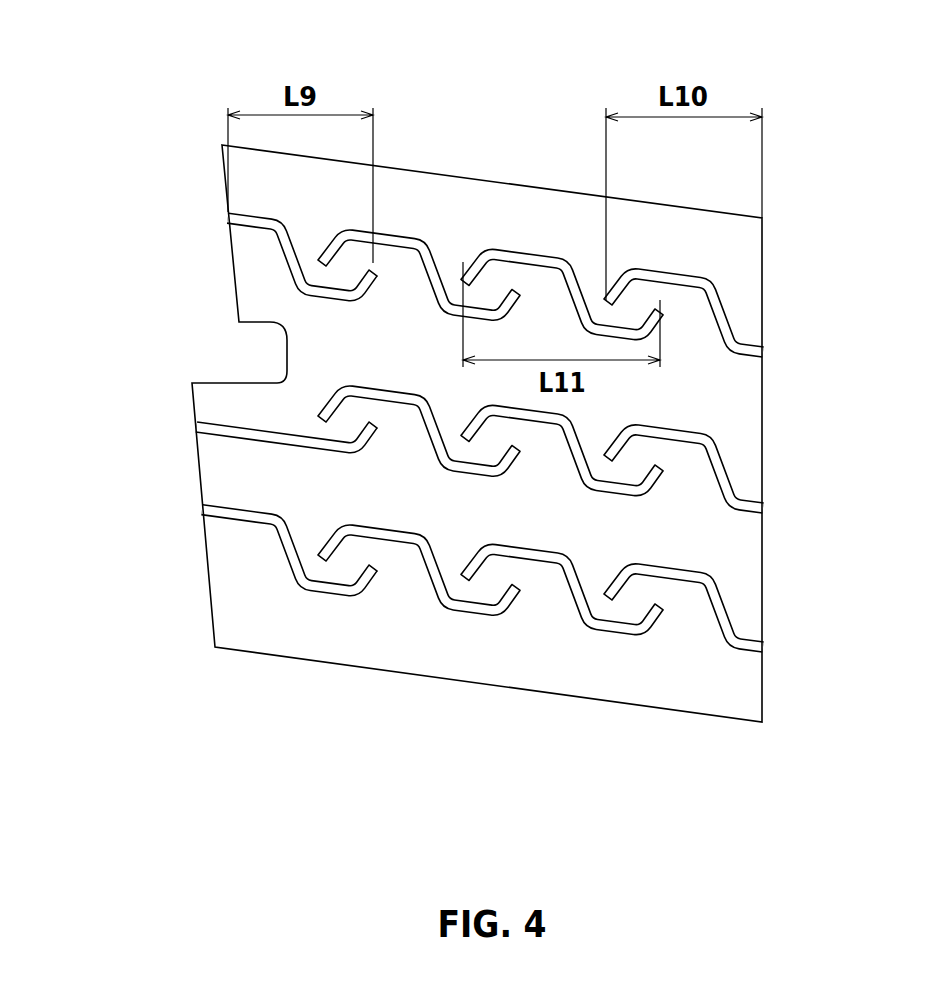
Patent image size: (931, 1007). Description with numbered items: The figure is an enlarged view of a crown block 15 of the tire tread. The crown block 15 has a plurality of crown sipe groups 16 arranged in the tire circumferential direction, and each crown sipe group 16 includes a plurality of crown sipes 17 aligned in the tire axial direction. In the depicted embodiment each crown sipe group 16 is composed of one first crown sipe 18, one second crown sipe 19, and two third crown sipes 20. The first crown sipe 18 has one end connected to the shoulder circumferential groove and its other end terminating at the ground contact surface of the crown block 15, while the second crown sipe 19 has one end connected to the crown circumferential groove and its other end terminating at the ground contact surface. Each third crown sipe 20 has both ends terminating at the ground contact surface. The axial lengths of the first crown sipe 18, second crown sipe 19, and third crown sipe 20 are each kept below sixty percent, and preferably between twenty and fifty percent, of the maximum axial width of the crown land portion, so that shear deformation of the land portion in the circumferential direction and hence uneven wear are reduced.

The crown block 15 is at (476, 117).
The crown sipe group 16 is at (240, 234).
The crown sipe 17 is at (482, 660).
The first crown sipe 18 is at (328, 587).
The second crown sipe 19 is at (669, 665).
The third crown sipe 20 is at (465, 605).